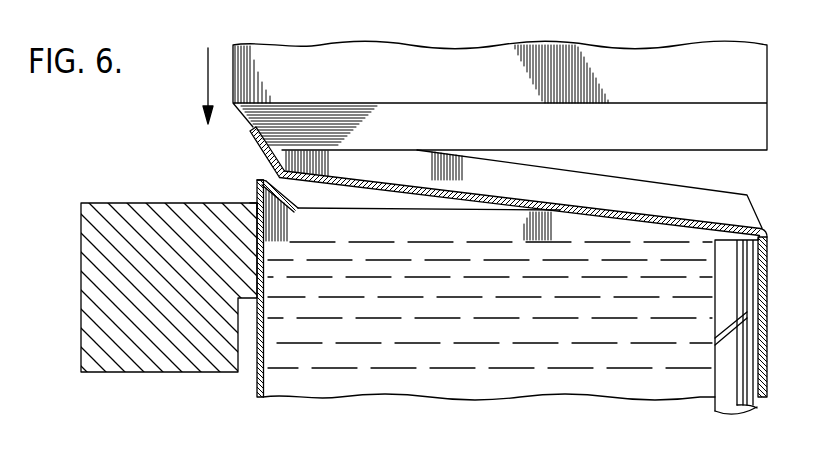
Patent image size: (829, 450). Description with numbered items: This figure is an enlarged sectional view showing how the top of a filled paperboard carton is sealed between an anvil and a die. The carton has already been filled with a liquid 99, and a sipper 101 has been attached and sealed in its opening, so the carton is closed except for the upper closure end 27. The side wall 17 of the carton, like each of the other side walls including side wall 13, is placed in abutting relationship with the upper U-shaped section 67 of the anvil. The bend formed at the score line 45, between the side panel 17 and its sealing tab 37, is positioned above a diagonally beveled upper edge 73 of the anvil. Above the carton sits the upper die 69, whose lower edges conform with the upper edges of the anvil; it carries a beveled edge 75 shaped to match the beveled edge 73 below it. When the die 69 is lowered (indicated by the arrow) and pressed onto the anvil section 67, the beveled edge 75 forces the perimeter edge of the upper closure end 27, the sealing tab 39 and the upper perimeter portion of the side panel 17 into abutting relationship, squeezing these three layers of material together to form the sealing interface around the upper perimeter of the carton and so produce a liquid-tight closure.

The carton side wall panel 13 is at (769, 382).
The side wall panel 17 is at (258, 378).
The upper closure end 27 is at (612, 210).
The sealing tab 37 is at (410, 201).
The sealing tab 39 is at (292, 202).
The scoring line 45 is at (262, 181).
The upper U-shaped section 67 is at (177, 228).
The upper die 69 is at (471, 52).
The beveled upper edge 73 is at (249, 216).
The beveled edge 75 is at (252, 130).
The liquid 99 is at (496, 337).
The sipper 101 is at (718, 401).